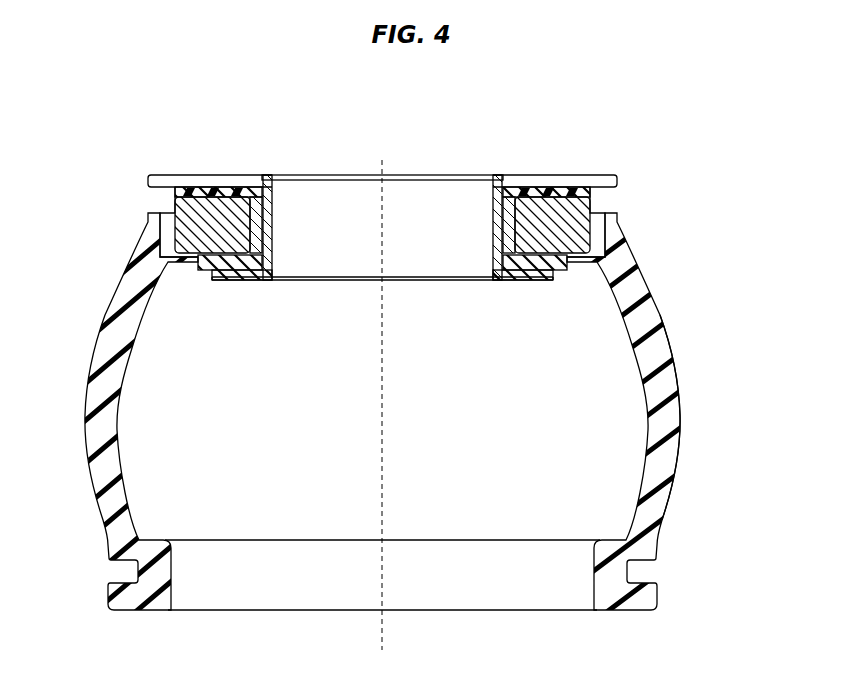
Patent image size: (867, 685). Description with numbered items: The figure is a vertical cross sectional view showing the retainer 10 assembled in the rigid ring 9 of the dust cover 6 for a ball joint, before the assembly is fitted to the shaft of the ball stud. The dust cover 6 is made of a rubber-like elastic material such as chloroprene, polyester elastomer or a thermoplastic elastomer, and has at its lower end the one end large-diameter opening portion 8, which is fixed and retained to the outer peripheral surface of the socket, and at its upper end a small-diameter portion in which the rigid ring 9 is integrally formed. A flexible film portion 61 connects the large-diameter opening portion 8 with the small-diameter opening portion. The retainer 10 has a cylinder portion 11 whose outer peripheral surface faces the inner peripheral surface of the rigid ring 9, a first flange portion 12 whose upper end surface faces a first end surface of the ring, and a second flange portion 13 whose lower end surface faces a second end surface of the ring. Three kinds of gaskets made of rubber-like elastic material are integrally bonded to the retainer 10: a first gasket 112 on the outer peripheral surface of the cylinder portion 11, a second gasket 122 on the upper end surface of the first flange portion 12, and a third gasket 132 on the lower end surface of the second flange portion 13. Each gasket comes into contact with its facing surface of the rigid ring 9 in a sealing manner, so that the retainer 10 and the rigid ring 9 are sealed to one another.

The dust cover 6 is at (400, 422).
The film portion 61 is at (667, 417).
The one end large-diameter opening portion 8 is at (623, 582).
The rigid ring 9 is at (606, 212).
The retainer 10 is at (517, 187).
The cylinder portion 11 is at (433, 342).
The first gasket 112 is at (495, 228).
The first flange portion 12 is at (404, 320).
The second gasket 122 is at (533, 280).
The second flange portion 13 is at (433, 342).
The third gasket 132 is at (540, 187).